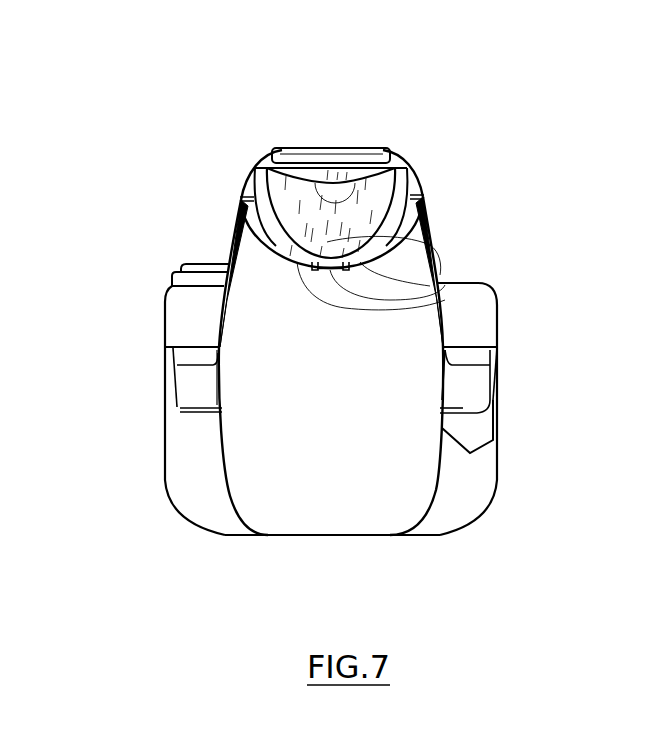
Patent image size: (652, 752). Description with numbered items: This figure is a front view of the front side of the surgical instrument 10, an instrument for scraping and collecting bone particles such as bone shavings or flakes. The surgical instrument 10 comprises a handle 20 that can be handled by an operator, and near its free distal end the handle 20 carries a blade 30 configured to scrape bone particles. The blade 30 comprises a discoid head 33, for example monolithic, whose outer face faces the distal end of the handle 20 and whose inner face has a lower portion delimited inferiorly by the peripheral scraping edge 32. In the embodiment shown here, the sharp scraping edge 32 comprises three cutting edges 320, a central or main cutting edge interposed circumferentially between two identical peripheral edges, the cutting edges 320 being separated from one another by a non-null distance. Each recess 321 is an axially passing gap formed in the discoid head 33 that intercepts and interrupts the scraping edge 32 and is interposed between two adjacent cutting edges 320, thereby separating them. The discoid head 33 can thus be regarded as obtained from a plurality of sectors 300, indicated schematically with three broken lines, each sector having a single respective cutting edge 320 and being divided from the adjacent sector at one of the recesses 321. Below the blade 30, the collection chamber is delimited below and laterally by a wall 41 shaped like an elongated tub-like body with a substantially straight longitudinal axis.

The surgical instrument 10 is at (128, 134).
The handle 20 is at (192, 317).
The blade 30 is at (397, 186).
The sectors 300 is at (283, 145).
The peripheral scraping edge 32 is at (356, 262).
The discoid head 33 is at (367, 212).
The recess 321 is at (327, 242).
The cutting edges 320 is at (305, 265).
The wall 41 is at (387, 417).